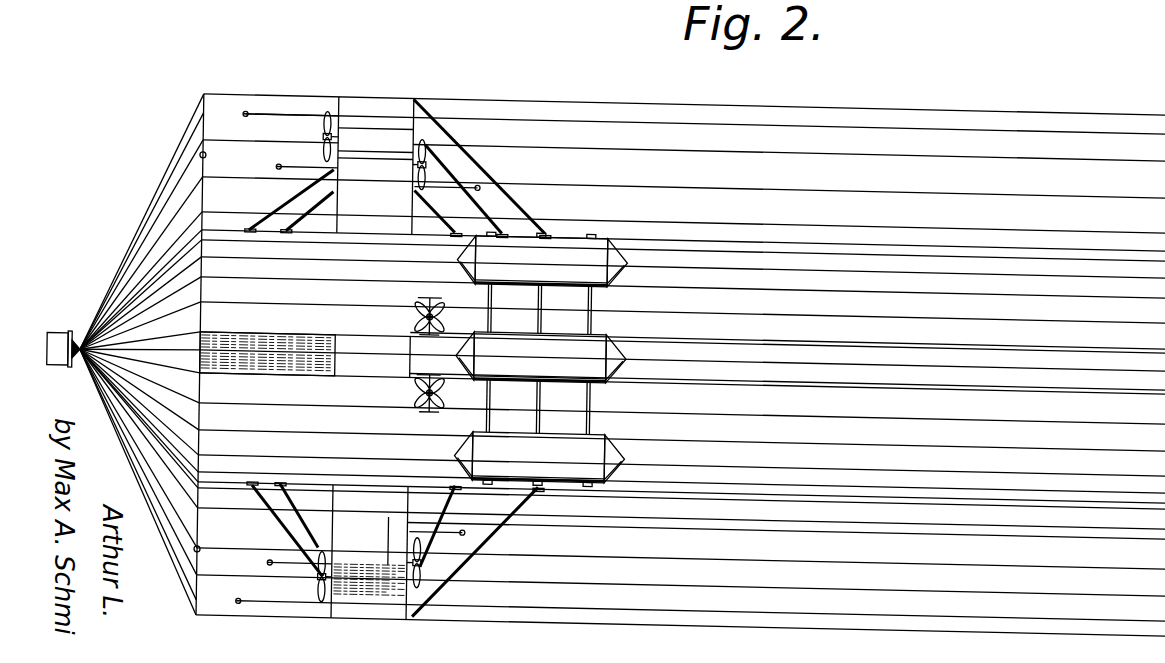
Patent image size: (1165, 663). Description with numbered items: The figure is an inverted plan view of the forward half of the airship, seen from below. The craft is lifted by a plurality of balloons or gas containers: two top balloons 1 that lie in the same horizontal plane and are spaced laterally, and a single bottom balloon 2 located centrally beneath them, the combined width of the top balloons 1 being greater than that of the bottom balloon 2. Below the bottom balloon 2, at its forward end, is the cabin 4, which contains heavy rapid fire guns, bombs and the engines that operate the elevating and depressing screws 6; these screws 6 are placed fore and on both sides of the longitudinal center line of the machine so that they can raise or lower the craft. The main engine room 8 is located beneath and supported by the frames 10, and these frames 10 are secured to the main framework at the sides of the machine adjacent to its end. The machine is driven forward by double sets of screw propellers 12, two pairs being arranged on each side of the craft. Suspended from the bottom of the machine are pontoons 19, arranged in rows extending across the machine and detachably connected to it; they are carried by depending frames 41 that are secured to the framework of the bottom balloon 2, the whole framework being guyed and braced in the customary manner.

The top balloon 1 is at (604, 357).
The bottom balloon 2 is at (680, 503).
The cabin 4 is at (305, 355).
The elevating and depressing screw 6 is at (419, 312).
The main engine room 8 is at (368, 133).
The frame 10 is at (414, 104).
The screw propeller 12 is at (326, 130).
The pontoon 19 is at (541, 360).
The depending frame 41 is at (538, 359).